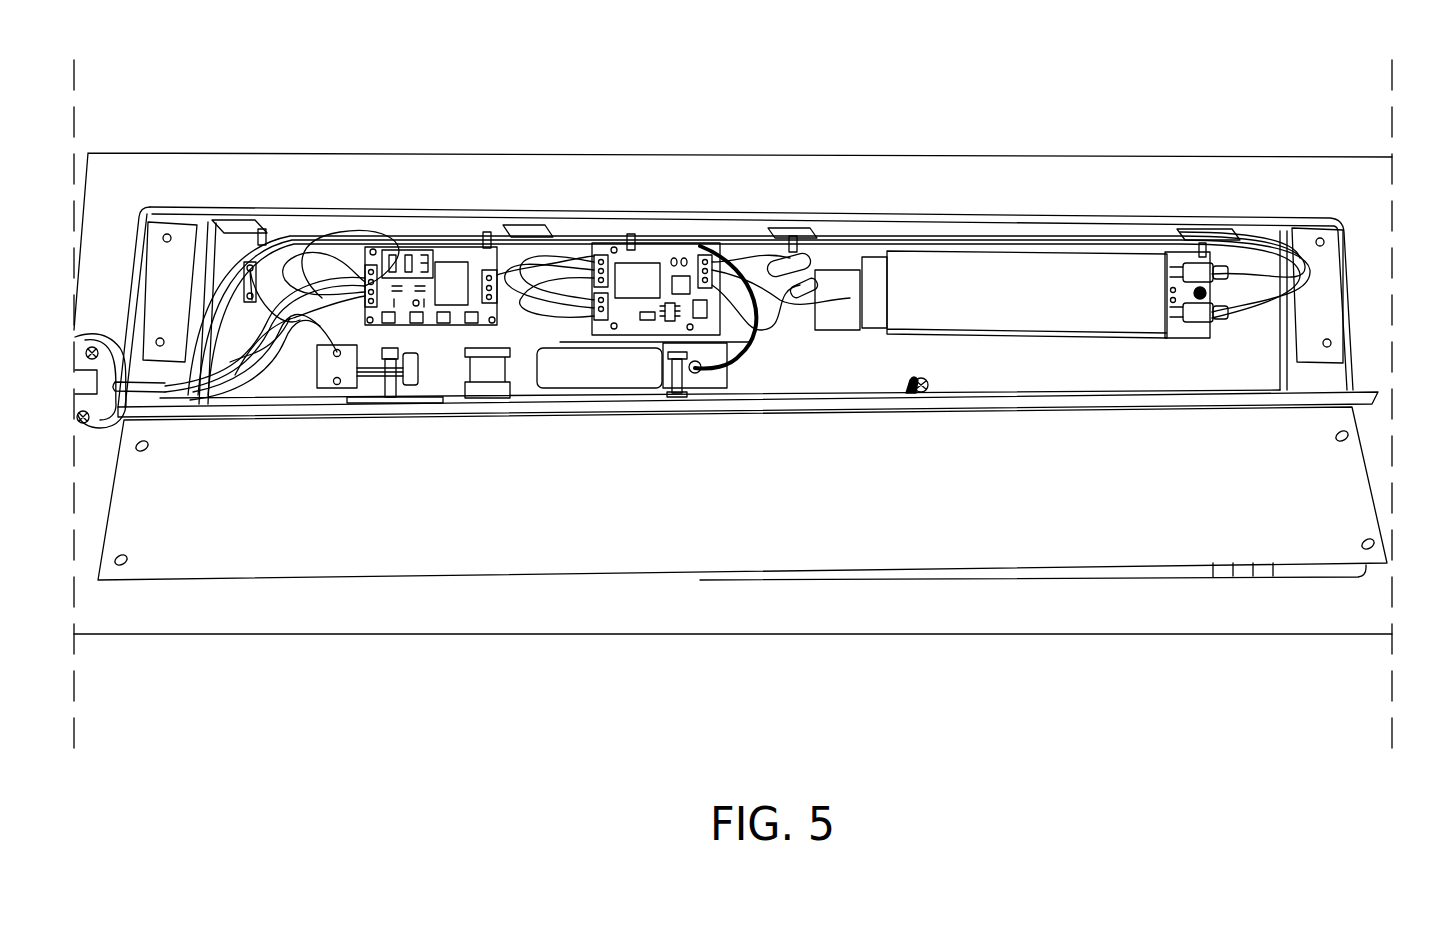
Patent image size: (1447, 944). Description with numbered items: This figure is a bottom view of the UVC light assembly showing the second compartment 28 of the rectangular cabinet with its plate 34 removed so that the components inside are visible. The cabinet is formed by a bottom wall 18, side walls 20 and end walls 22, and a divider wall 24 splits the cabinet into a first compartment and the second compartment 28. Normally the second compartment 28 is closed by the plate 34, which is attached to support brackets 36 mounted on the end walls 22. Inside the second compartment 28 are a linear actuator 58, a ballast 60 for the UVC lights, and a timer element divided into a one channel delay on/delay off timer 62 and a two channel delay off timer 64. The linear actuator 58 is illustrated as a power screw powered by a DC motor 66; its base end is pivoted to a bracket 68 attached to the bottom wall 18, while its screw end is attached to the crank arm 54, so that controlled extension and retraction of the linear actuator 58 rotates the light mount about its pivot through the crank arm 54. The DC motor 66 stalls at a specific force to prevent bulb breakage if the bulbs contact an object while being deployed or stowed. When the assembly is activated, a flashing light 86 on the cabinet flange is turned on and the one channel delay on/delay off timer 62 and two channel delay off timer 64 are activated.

The bottom wall 18 is at (1187, 377).
The side walls 20 is at (772, 212).
The end walls 22 is at (1350, 344).
The divider wall 24 is at (803, 398).
The second compartment 28 is at (1073, 363).
The plate 34 is at (1013, 493).
The support brackets 36 is at (1318, 292).
The crank arm 54 is at (390, 388).
The linear actuator 58 is at (521, 395).
The ballast 60 is at (1060, 283).
The one channel delay on/delay off timer 62 is at (456, 284).
The two channel delay off timer 64 is at (652, 275).
The DC motor 66 is at (603, 392).
The bracket 68 is at (710, 390).
The flashing light 86 is at (93, 382).